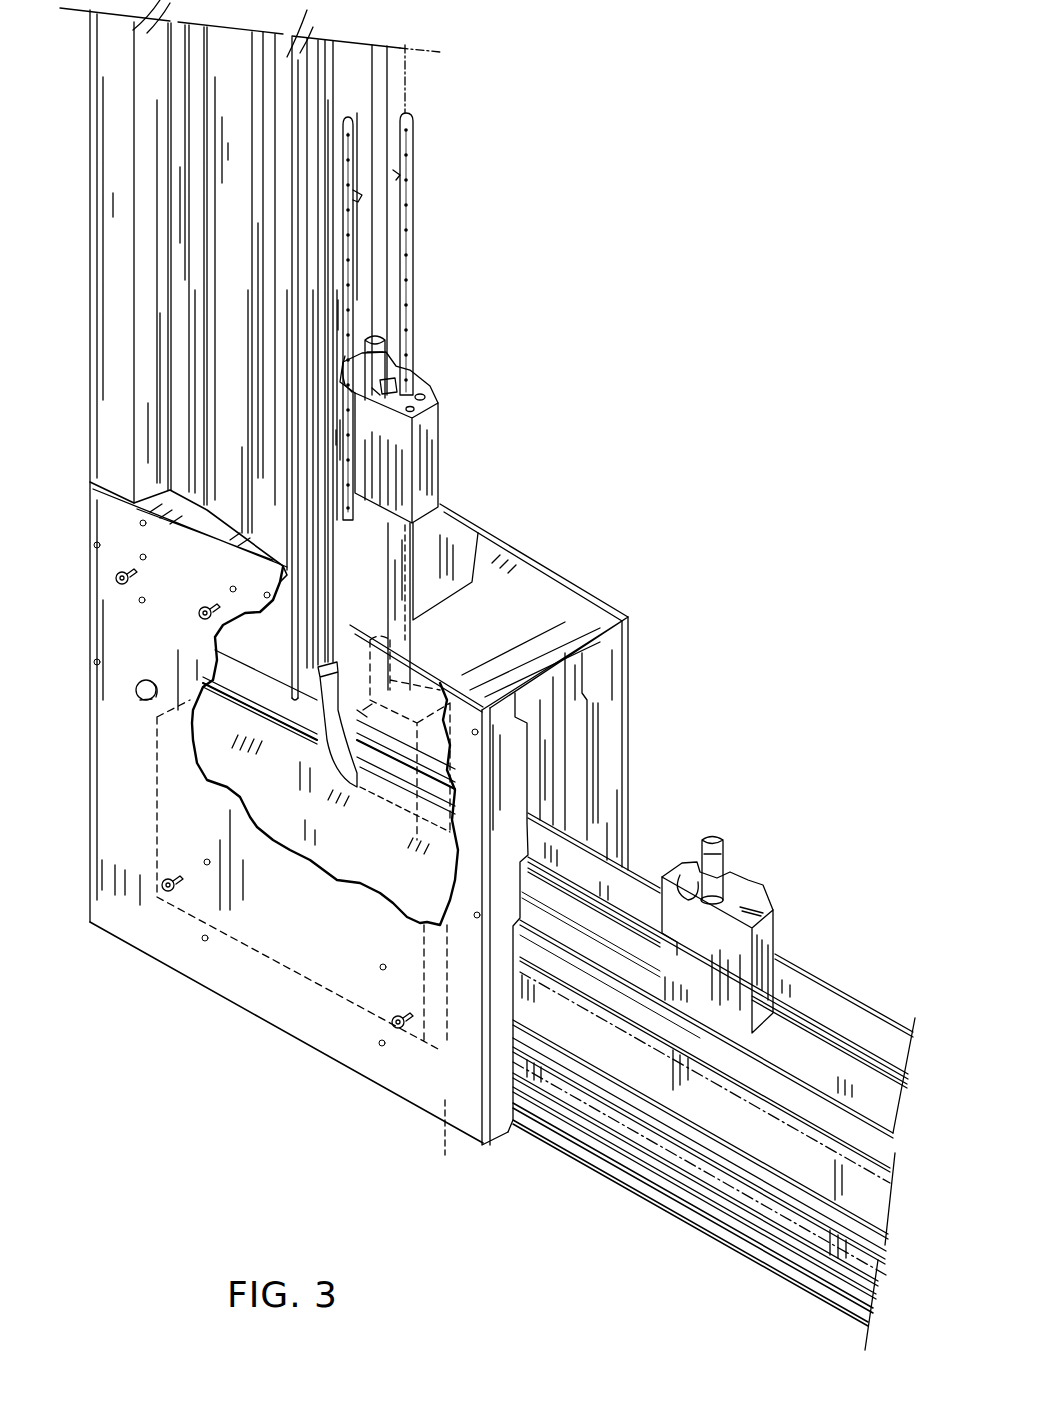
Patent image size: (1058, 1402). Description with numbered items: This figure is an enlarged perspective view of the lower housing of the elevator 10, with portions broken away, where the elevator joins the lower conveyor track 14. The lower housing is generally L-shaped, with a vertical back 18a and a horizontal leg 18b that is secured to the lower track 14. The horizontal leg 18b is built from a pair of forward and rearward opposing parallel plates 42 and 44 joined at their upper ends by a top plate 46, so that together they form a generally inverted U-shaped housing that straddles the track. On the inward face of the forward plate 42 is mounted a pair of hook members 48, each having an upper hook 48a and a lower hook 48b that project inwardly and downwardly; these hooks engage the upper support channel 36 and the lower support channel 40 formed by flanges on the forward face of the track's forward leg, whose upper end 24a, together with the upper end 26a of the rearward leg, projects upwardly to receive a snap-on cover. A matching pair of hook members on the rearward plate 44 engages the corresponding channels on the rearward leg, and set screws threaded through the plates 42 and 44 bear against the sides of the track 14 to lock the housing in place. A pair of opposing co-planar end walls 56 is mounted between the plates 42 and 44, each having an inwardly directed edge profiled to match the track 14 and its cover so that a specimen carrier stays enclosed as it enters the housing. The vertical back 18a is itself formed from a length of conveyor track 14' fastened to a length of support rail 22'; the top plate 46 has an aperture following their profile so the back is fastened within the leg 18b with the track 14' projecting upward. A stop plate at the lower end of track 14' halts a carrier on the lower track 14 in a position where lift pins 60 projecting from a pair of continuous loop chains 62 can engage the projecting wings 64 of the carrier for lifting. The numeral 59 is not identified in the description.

The elevator 10 is at (632, 302).
The lower conveyor track 14 is at (693, 1214).
The conveyor track length 14' is at (192, 438).
The vertical back of lower housing 18a is at (132, 257).
The horizontal leg of lower housing 18b is at (560, 565).
The support rail length 22' is at (262, 367).
The upper end of track forward leg 24a is at (782, 1030).
The upper end of track rearward leg 26a is at (848, 1010).
The upper support channel 36 is at (652, 982).
The lower support channel 40 is at (728, 1122).
The forward plate 42 is at (413, 1083).
The rearward plate 44 is at (628, 786).
The top plate 46 is at (567, 608).
The hook member 48 is at (353, 987).
The upper hook 48a is at (413, 867).
The lower hook 48b is at (453, 1146).
The end wall 56 is at (512, 790).
The bracket 59 is at (320, 727).
The lift pin 60 is at (398, 176).
The continuous loop chain 62 is at (413, 295).
The projecting wing 64 is at (381, 391).